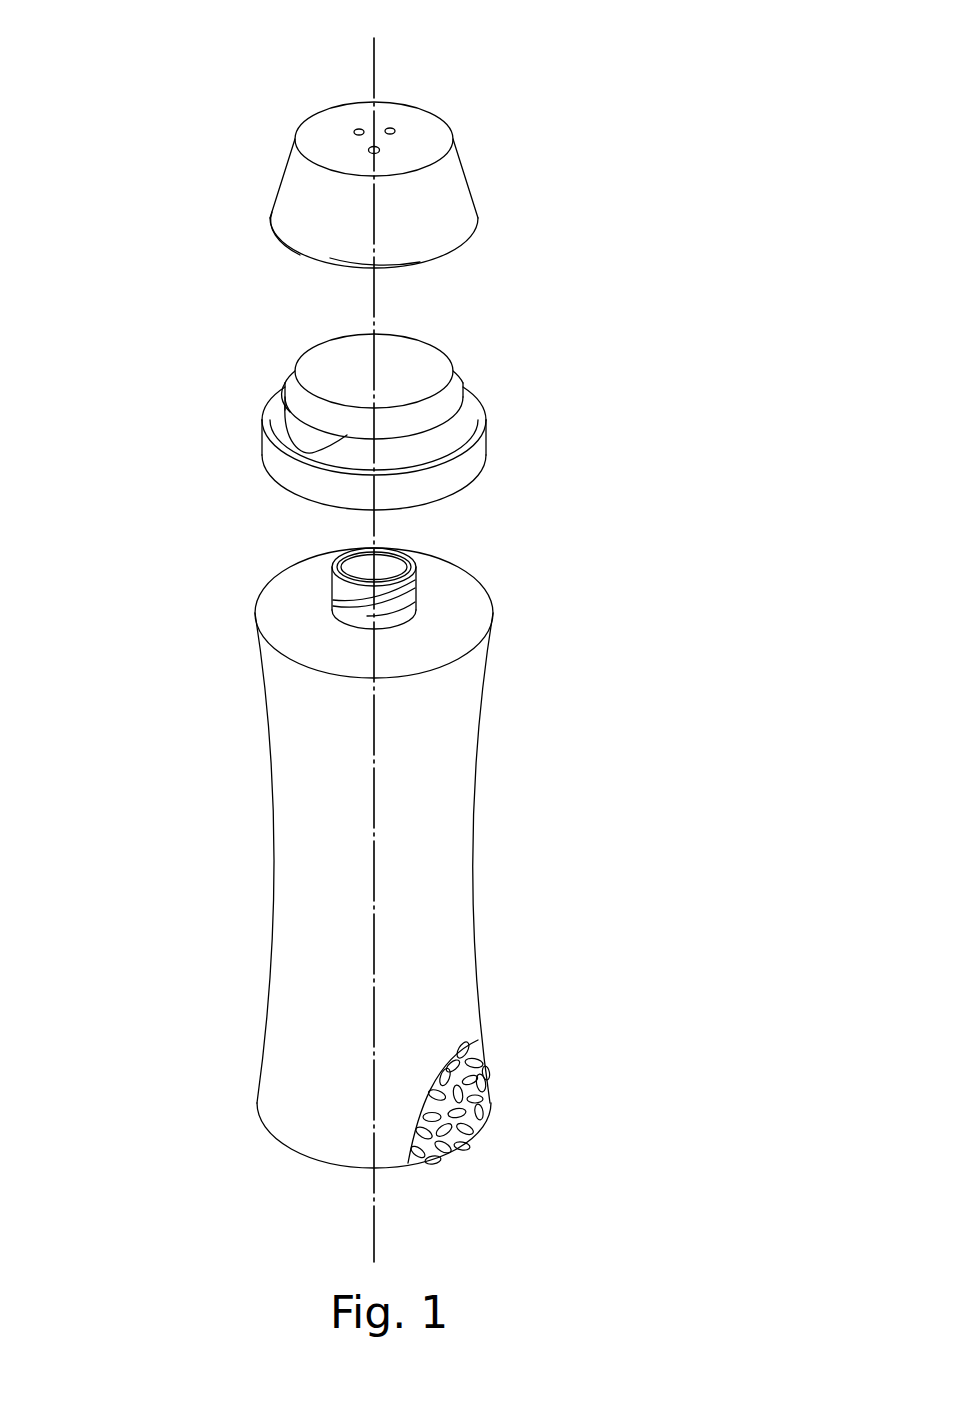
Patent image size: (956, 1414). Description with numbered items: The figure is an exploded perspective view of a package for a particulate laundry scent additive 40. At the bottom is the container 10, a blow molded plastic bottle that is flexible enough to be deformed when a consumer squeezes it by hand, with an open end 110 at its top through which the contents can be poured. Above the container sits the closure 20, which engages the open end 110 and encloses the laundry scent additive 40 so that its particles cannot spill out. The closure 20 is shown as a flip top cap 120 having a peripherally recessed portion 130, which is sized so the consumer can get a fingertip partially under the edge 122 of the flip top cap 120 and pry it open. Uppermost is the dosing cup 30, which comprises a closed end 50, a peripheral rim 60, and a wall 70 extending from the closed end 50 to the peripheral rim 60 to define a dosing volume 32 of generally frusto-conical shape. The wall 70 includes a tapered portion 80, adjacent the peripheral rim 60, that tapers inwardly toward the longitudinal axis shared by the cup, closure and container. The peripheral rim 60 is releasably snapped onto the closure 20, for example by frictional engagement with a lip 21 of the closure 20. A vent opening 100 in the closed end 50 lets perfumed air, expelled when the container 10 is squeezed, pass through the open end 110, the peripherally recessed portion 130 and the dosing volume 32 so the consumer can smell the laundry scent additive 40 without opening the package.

The container 10 is at (444, 852).
The closure 20 is at (369, 441).
The lip 21 is at (476, 445).
The dosing cup 30 is at (325, 165).
The dosing volume 32 is at (437, 268).
The laundry scent additive 40 is at (490, 1105).
The closed end 50 is at (430, 128).
The peripheral rim 60 is at (305, 260).
The wall 70 is at (273, 202).
The tapered portion 80 is at (295, 227).
The vent opening 100 is at (392, 130).
The open end 110 is at (396, 566).
The flip top cap 120 is at (342, 386).
The edge 122 is at (285, 392).
The peripherally recessed portion 130 is at (307, 437).